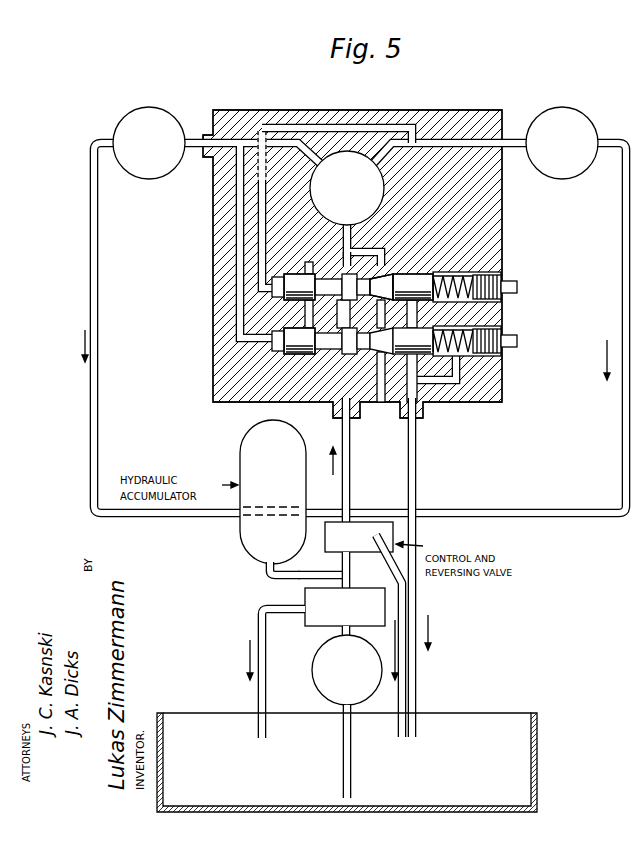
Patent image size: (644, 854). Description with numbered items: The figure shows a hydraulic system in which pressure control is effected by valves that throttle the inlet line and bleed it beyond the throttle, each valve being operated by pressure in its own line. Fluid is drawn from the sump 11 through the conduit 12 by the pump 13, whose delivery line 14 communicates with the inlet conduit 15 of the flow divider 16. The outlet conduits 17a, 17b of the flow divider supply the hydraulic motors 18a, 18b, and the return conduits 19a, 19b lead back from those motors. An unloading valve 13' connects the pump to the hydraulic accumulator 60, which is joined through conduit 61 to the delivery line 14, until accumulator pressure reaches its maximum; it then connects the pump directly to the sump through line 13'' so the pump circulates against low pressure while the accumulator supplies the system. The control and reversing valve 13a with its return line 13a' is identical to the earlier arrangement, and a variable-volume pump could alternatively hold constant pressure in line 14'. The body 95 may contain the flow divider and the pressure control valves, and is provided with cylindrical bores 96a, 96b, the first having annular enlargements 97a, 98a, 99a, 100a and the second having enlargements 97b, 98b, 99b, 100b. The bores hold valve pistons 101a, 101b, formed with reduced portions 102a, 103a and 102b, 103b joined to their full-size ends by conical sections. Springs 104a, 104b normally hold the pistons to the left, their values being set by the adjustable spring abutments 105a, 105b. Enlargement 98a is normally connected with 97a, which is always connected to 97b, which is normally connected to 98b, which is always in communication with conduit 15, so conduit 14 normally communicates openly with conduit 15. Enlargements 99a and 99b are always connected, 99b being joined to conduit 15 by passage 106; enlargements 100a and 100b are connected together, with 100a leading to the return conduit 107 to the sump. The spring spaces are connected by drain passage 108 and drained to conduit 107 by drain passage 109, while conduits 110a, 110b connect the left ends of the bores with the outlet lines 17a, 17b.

The sump 11 is at (540, 744).
The conduit 12 is at (352, 726).
The pump 13 is at (354, 665).
The unloading valve 13' is at (345, 589).
The line 13'' is at (259, 673).
The control and reversing valve 13a is at (359, 537).
The return line 13a' is at (384, 636).
The delivery line 14 is at (354, 460).
The line 14' is at (321, 564).
The inlet conduit 15 is at (300, 246).
The flow divider 16 is at (345, 152).
The outlet conduit 17a is at (197, 140).
The outlet conduit 17b is at (510, 140).
The hydraulic motor 18a is at (165, 108).
The hydraulic motor 18b is at (576, 110).
The return conduit 19a is at (72, 432).
The return conduit 19b is at (615, 462).
The hydraulic accumulator 60 is at (273, 492).
The conduit 61 is at (268, 576).
The body 95 is at (427, 112).
The cylindrical bore 96a is at (284, 350).
The cylindrical bore 96b is at (284, 286).
The annular enlargement 97a is at (300, 375).
The annular enlargement 97b is at (290, 270).
The annular enlargement 98a is at (336, 403).
The annular enlargement 98b is at (430, 262).
The annular enlargement 99a is at (381, 412).
The annular enlargement 99b is at (420, 270).
The annular enlargement 100a is at (445, 396).
The annular enlargement 100b is at (455, 272).
The valve piston 101a is at (280, 335).
The valve piston 101b is at (300, 302).
The reduced portion 102a is at (252, 402).
The reduced portion 102b is at (300, 310).
The reduced portion 103a is at (404, 420).
The reduced portion 103b is at (445, 268).
The spring 104a is at (505, 358).
The spring 104b is at (500, 308).
The adjustable spring abutment 105a is at (520, 338).
The adjustable spring abutment 105b is at (506, 280).
The passage 106 is at (440, 250).
The return conduit 107 is at (418, 522).
The drain passage 108 is at (486, 318).
The drain passage 109 is at (480, 378).
The conduit 110a is at (236, 206).
The conduit 110b is at (258, 176).